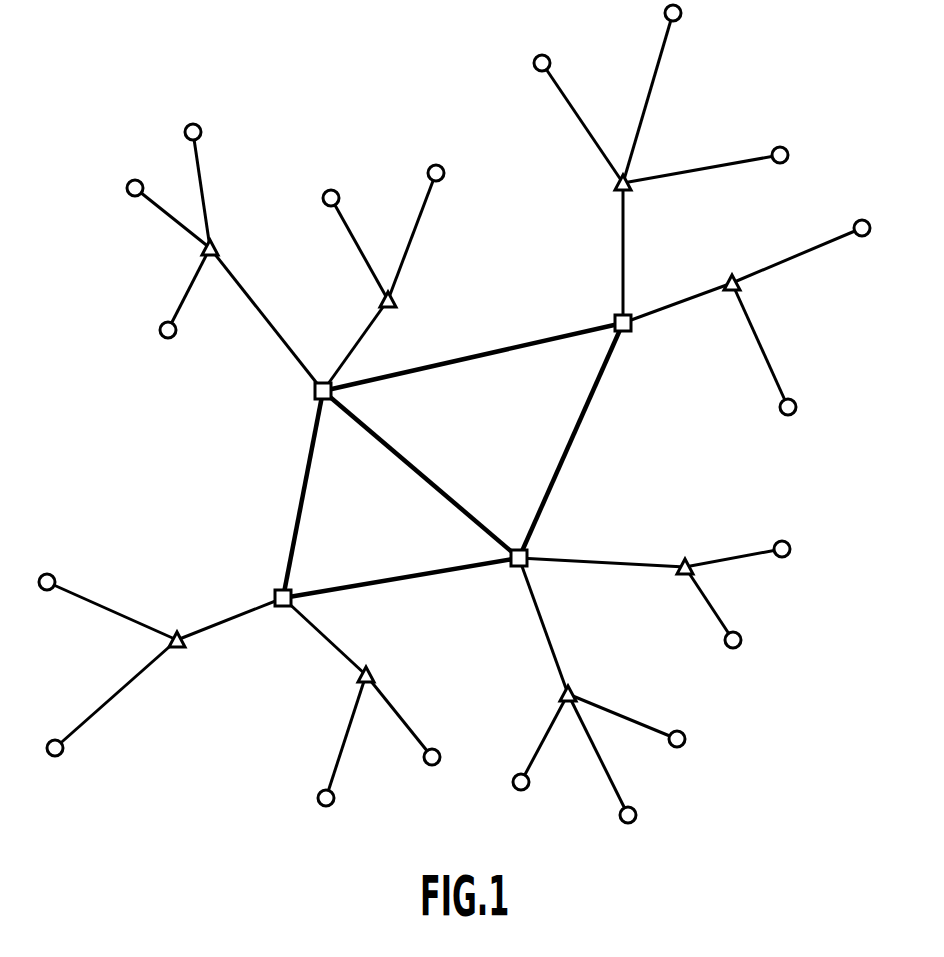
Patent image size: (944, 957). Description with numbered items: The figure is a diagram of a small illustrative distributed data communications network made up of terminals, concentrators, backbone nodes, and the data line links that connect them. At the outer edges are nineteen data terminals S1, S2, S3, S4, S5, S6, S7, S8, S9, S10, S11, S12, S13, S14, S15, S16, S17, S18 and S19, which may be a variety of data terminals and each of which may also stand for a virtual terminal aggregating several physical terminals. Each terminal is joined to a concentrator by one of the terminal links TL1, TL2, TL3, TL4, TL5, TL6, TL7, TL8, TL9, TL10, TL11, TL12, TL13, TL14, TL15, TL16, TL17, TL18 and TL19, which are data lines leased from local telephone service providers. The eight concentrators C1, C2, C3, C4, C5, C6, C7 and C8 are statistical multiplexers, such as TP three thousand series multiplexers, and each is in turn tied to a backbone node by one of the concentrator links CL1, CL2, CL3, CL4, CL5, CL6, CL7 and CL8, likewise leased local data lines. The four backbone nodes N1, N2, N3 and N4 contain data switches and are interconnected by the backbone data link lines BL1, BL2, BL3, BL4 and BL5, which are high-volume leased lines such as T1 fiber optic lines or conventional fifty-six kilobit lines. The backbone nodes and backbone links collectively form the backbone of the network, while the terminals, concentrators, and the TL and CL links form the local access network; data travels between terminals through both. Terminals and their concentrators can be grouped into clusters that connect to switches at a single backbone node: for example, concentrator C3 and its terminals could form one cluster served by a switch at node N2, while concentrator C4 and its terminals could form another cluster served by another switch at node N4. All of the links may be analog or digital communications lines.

The backbone node N1 is at (637, 343).
The backbone node N2 is at (509, 534).
The backbone node N3 is at (299, 582).
The backbone node N4 is at (305, 393).
The concentrator C1 is at (607, 186).
The concentrator C2 is at (720, 264).
The concentrator C3 is at (676, 543).
The concentrator C4 is at (582, 677).
The concentrator C5 is at (379, 660).
The concentrator C6 is at (194, 652).
The concentrator C7 is at (227, 245).
The concentrator C8 is at (407, 308).
The data terminal S1 is at (550, 47).
The data terminal S2 is at (692, 15).
The data terminal S3 is at (799, 160).
The data terminal S4 is at (868, 249).
The data terminal S5 is at (807, 419).
The data terminal S6 is at (793, 531).
The data terminal S7 is at (728, 657).
The data terminal S8 is at (696, 751).
The data terminal S9 is at (639, 833).
The data terminal S10 is at (523, 799).
The data terminal S11 is at (431, 774).
The data terminal S12 is at (323, 816).
The data terminal S13 is at (61, 767).
The data terminal S14 is at (53, 561).
The data terminal S15 is at (158, 350).
The data terminal S16 is at (138, 169).
The data terminal S17 is at (206, 114).
The data terminal S18 is at (336, 178).
The data terminal S19 is at (449, 155).
The backbone data link line BL1 is at (571, 440).
The backbone data link line BL2 is at (401, 587).
The backbone data link line BL3 is at (319, 494).
The backbone data link line BL4 is at (421, 474).
The backbone data link line BL5 is at (473, 361).
The concentrator link CL1 is at (607, 253).
The concentrator link CL2 is at (682, 311).
The concentrator link CL3 is at (602, 581).
The concentrator link CL4 is at (536, 626).
The concentrator link CL5 is at (324, 636).
The concentrator link CL6 is at (230, 606).
The concentrator link CL7 is at (266, 319).
The concentrator link CL8 is at (366, 345).
The terminal link TL1 is at (582, 123).
The terminal link TL2 is at (660, 98).
The terminal link TL3 is at (701, 181).
The terminal link TL4 is at (797, 265).
The terminal link TL5 is at (759, 345).
The terminal link TL6 is at (733, 541).
The terminal link TL7 is at (719, 603).
The terminal link TL8 is at (622, 712).
The terminal link TL9 is at (612, 754).
The terminal link TL10 is at (530, 738).
The terminal link TL11 is at (412, 716).
The terminal link TL12 is at (324, 736).
The terminal link TL13 is at (116, 694).
The terminal link TL14 is at (112, 607).
The terminal link TL15 is at (208, 289).
The terminal link TL16 is at (167, 218).
The terminal link TL17 is at (226, 190).
The terminal link TL18 is at (349, 249).
The terminal link TL19 is at (403, 236).